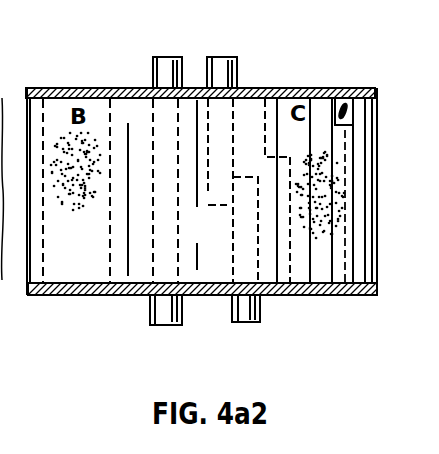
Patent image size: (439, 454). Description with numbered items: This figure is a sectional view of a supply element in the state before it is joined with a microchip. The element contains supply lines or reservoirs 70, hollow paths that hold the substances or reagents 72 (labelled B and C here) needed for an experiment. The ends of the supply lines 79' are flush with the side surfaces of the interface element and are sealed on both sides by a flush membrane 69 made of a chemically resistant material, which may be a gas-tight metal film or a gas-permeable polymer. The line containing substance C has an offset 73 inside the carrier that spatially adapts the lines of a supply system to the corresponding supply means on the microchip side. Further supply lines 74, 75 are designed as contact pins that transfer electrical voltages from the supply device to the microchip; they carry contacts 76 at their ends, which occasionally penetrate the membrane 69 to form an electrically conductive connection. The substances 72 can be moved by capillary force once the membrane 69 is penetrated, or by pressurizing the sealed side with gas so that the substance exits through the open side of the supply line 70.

The membrane 69 is at (104, 98).
The supply lines 70 is at (366, 188).
The substances 72 is at (72, 238).
The offset 73 is at (346, 97).
The supply line 74 is at (167, 247).
The supply line 75 is at (240, 216).
The contacts 76 is at (244, 323).
The ends of the supply lines 79' is at (46, 50).